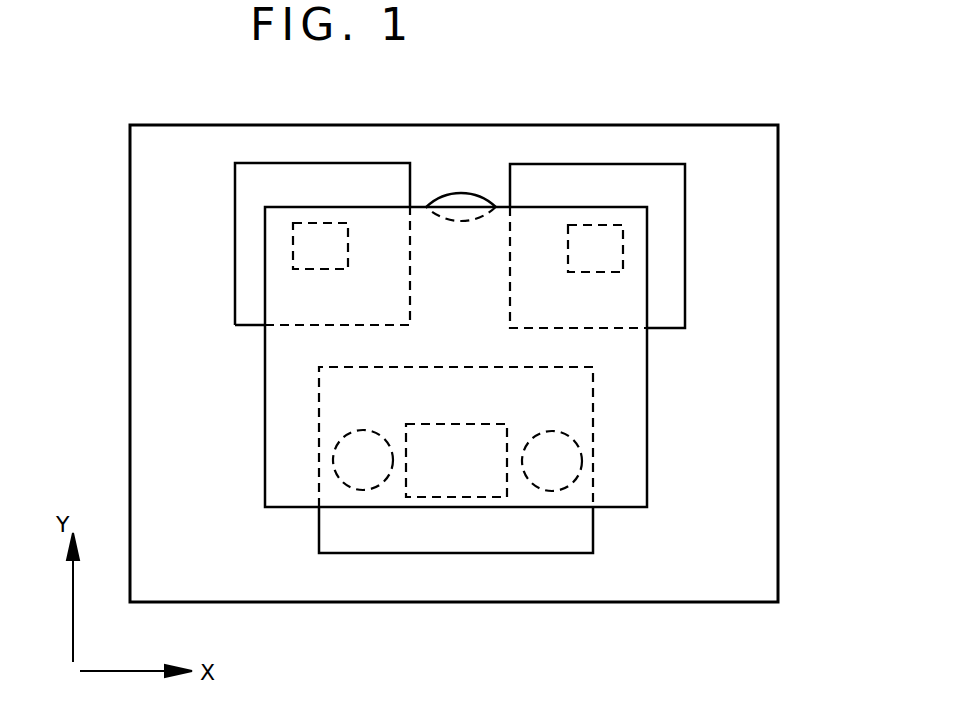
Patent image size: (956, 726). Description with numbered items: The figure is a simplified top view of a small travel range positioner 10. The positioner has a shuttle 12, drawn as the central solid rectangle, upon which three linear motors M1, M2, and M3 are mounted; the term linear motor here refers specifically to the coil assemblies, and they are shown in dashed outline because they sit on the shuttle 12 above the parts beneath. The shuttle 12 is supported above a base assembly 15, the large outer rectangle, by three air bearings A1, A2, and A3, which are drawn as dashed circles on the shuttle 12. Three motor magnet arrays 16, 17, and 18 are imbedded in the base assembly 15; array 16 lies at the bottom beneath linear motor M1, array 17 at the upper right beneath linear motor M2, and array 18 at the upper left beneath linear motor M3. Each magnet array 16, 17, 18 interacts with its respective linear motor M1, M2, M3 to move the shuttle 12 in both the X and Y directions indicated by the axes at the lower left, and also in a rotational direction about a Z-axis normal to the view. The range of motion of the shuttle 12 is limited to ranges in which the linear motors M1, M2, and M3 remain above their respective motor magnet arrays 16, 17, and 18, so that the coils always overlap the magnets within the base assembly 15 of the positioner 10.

The small travel range positioner 10 is at (848, 656).
The shuttle 12 is at (650, 378).
The base assembly 15 is at (778, 497).
The motor magnet array 16 is at (392, 553).
The motor magnet array 17 is at (657, 164).
The motor magnet array 18 is at (248, 163).
The linear motor M1 is at (456, 460).
The linear motor M2 is at (595, 248).
The linear motor M3 is at (320, 246).
The air bearing A1 is at (363, 460).
The air bearing A2 is at (552, 461).
The air bearing A3 is at (460, 225).